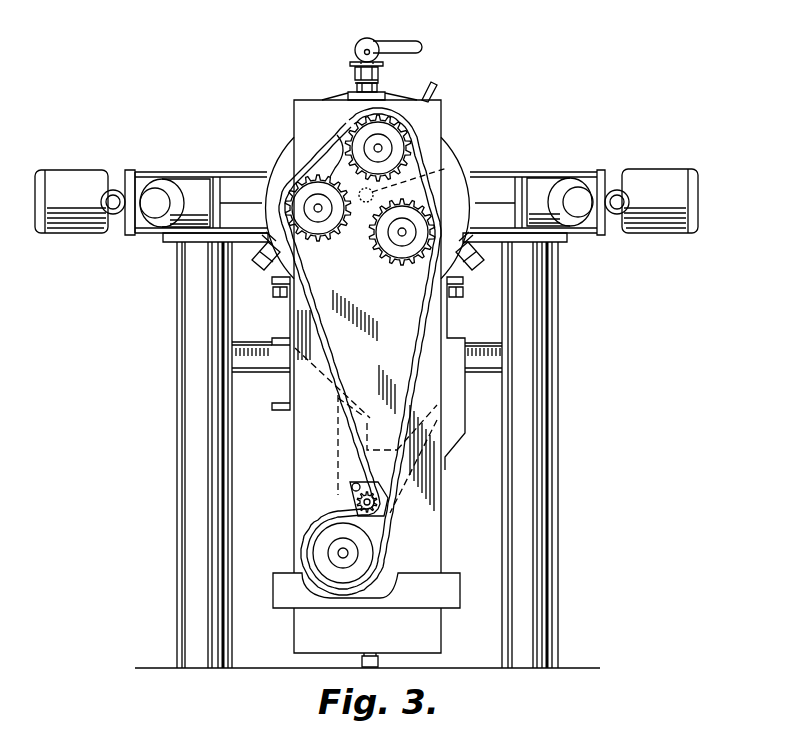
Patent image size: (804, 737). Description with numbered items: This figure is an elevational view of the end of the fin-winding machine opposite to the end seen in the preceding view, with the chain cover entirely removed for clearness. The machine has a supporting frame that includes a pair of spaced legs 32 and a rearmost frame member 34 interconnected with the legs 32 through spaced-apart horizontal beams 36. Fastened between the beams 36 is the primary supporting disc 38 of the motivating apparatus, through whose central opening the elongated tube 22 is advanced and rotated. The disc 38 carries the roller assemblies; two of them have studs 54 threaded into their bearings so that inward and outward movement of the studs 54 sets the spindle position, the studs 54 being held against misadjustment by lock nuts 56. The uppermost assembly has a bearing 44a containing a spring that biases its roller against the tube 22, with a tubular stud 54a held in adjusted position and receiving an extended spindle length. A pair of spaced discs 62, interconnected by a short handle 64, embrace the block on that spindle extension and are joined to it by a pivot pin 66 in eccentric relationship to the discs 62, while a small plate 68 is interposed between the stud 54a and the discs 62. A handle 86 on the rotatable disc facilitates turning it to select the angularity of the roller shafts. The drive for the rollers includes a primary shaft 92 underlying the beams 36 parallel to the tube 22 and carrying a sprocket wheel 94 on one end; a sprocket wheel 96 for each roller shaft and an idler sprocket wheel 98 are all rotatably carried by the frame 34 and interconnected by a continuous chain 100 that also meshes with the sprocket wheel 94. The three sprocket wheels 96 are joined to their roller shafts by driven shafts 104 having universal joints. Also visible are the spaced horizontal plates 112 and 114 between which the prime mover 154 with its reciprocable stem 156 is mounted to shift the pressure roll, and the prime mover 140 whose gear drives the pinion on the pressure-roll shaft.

The elongated tube 22 is at (413, 185).
The spaced legs 32 is at (183, 580).
The rearmost frame member 34 is at (303, 110).
The horizontal beams 36 is at (290, 318).
The primary supporting disc 38 is at (286, 148).
The bearing 44a is at (378, 97).
The studs 54 is at (260, 268).
The tubular stud 54a is at (355, 75).
The lock nuts 56 is at (268, 240).
The spaced discs 62 is at (360, 39).
The short handle 64 is at (401, 43).
The pivot pin 66 is at (364, 52).
The small plate 68 is at (350, 64).
The handle 86 is at (434, 84).
The primary shaft 92 is at (358, 503).
The sprocket wheel 94 is at (352, 491).
The sprocket wheels 96 is at (402, 148).
The idler sprocket wheel 98 is at (364, 559).
The continuous chain 100 is at (328, 345).
The driven shafts 104 is at (327, 150).
The horizontal plate 112 is at (187, 176).
The horizontal plate 114 is at (172, 242).
The prime mover 140 is at (81, 233).
The prime mover 154 is at (204, 188).
The reciprocable stem 156 is at (250, 203).